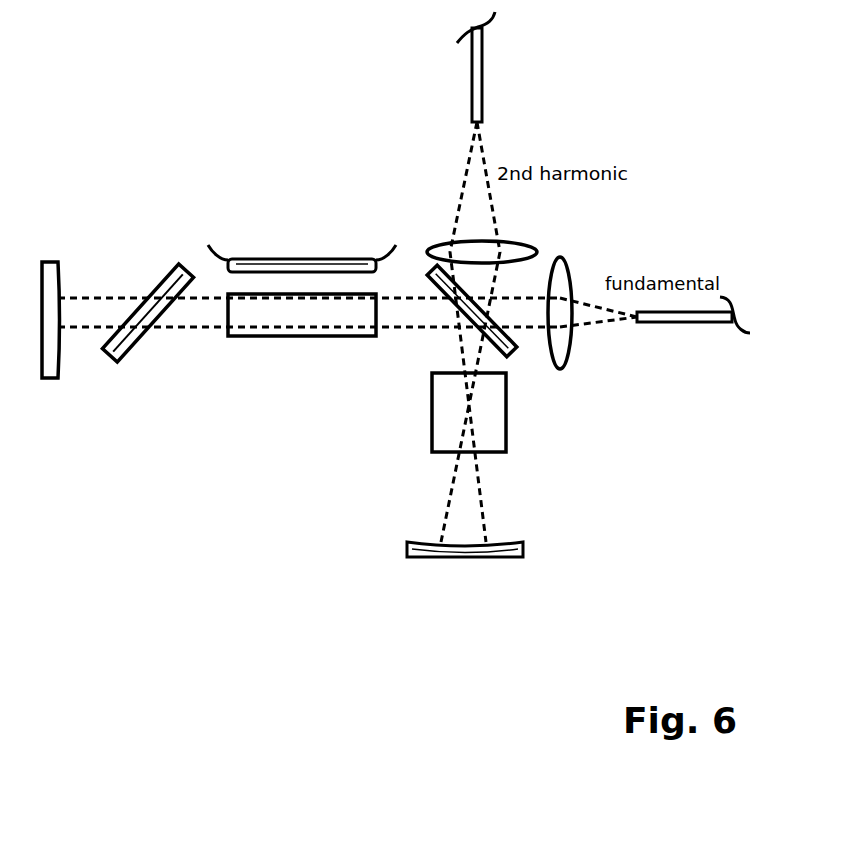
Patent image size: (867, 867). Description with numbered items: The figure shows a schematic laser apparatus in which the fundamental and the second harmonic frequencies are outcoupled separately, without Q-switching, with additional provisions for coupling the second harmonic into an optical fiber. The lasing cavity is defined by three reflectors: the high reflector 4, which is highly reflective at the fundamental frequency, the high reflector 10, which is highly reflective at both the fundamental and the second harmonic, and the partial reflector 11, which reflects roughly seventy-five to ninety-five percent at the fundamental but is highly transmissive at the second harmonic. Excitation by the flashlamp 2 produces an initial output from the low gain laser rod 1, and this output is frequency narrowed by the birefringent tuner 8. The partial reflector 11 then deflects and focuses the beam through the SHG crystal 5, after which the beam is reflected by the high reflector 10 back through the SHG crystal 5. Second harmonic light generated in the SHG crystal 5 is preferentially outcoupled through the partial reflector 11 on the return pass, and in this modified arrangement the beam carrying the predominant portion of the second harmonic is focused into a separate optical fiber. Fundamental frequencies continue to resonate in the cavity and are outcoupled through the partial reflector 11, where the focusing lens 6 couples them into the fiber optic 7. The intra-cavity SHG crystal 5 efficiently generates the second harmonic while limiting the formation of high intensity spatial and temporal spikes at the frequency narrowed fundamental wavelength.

The low gain laser rod 1 is at (328, 337).
The flashlamp 2 is at (315, 258).
The high reflector 4 is at (55, 262).
The SHG crystal 5 is at (506, 408).
The focusing lens 6 is at (568, 265).
The fiber optic 7 is at (483, 70).
The birefringent tuner 8 is at (135, 335).
The high reflector 10 is at (490, 557).
The partial reflector 11 is at (505, 360).